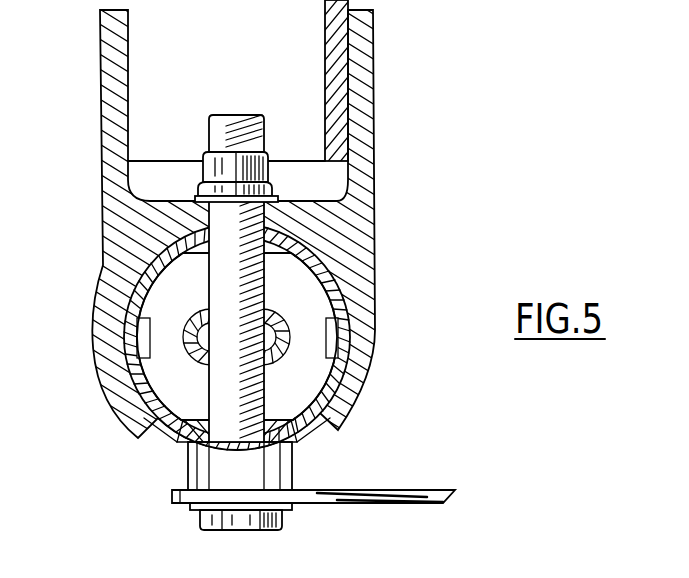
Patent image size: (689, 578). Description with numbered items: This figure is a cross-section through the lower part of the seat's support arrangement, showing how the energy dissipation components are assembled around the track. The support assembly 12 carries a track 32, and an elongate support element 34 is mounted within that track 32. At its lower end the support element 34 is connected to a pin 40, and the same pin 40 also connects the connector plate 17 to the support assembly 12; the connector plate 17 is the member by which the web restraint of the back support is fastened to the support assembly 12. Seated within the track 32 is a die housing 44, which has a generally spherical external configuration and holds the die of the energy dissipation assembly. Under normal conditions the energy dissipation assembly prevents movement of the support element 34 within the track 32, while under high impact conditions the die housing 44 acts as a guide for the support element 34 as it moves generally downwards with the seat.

The support assembly 12 is at (396, 96).
The connector plate 17 is at (398, 490).
The track 32 is at (378, 343).
The support element 34 is at (200, 360).
The pin 40 is at (303, 197).
The die housing 44 is at (327, 275).